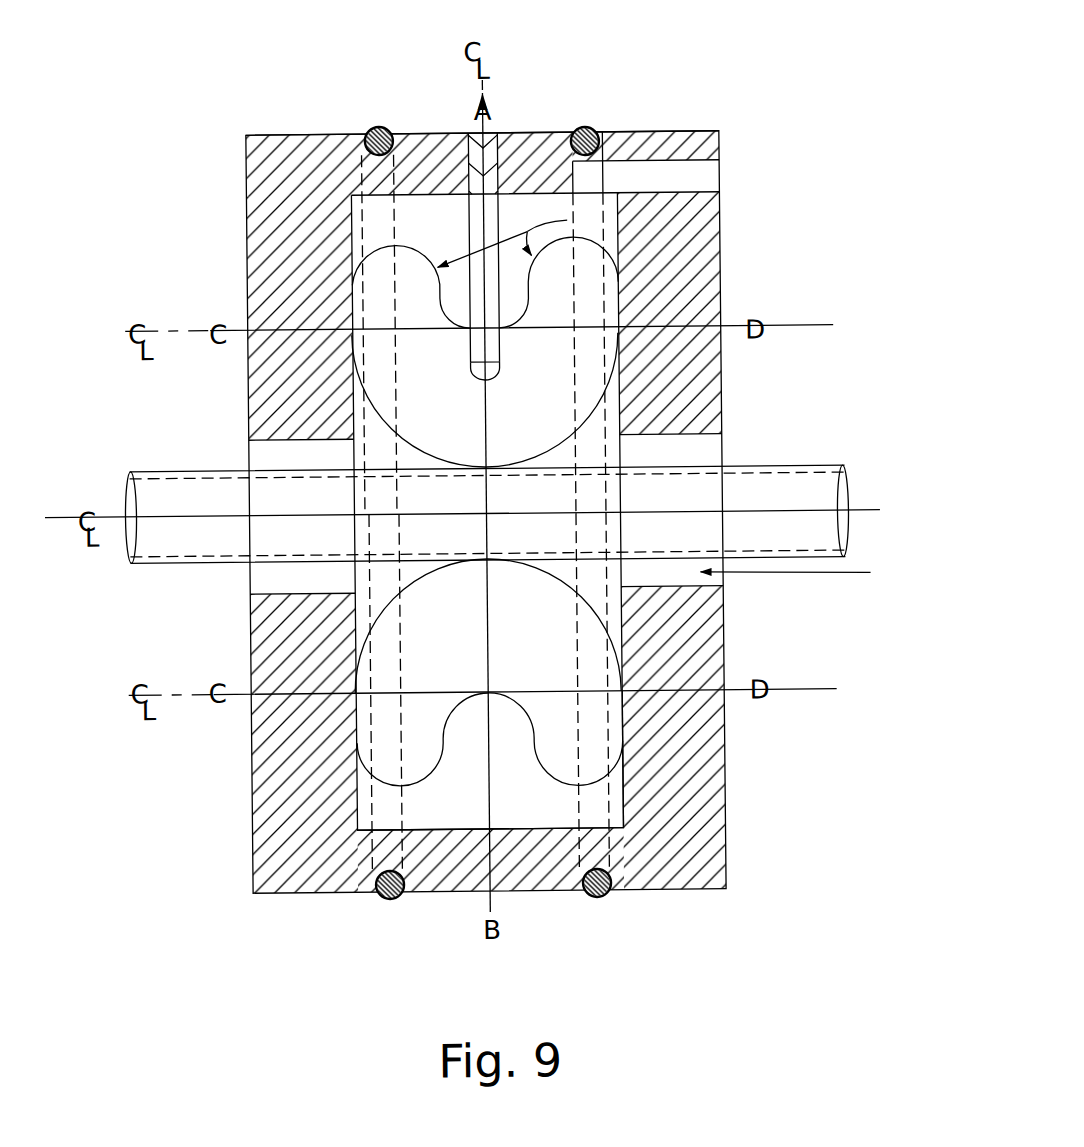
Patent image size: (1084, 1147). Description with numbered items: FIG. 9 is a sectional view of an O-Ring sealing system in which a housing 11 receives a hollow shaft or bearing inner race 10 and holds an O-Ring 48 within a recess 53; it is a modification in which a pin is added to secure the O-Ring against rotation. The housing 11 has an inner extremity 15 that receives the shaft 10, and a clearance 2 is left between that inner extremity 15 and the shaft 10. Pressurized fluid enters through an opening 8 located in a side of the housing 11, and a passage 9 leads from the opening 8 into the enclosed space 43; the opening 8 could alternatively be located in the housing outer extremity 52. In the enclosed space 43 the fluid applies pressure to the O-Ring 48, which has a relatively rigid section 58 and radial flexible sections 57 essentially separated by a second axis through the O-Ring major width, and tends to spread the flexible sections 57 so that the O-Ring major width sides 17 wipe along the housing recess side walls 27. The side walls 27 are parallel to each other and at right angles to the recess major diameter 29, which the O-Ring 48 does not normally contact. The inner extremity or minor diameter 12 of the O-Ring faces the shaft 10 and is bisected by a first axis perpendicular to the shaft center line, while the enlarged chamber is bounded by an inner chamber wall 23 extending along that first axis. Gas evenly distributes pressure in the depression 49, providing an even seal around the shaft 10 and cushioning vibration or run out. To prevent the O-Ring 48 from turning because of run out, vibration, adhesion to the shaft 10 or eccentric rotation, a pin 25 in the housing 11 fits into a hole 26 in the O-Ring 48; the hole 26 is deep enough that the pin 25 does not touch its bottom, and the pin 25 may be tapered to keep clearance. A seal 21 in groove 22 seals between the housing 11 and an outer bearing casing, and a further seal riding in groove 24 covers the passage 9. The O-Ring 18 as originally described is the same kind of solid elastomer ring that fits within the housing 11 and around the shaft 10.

The clearance 2 is at (871, 455).
The opening 8 is at (768, 180).
The passage 9 is at (581, 223).
The shaft 10 is at (561, 542).
The housing 11 is at (311, 270).
The O-Ring minor diameter 12 is at (487, 467).
The housing inner extremity 15 is at (321, 436).
The O-Ring major width sides 17 is at (354, 299).
The O-Ring 18 is at (516, 432).
The seal 21 is at (379, 896).
The groove 22 is at (399, 892).
The inner chamber wall 23 is at (588, 899).
The groove 24 is at (606, 893).
The pin 25 is at (475, 347).
The hole 26 is at (470, 373).
The housing recess side walls 27 is at (356, 611).
The recess major diameter 29 is at (485, 829).
The enclosed space 43 is at (522, 802).
The O-Ring 48 is at (572, 591).
The depression 49 is at (486, 693).
The housing outer extremity 52 is at (324, 132).
The recess 53 is at (409, 567).
The radial flexible sections 57 is at (405, 737).
The rigid section 58 is at (405, 669).